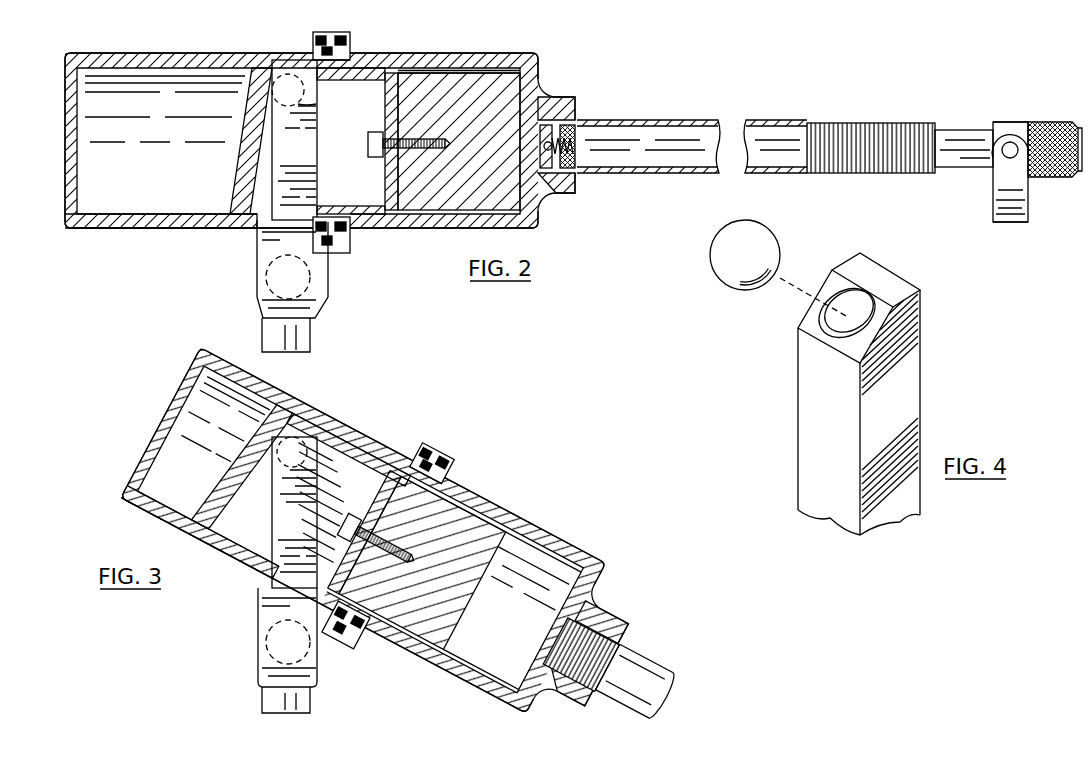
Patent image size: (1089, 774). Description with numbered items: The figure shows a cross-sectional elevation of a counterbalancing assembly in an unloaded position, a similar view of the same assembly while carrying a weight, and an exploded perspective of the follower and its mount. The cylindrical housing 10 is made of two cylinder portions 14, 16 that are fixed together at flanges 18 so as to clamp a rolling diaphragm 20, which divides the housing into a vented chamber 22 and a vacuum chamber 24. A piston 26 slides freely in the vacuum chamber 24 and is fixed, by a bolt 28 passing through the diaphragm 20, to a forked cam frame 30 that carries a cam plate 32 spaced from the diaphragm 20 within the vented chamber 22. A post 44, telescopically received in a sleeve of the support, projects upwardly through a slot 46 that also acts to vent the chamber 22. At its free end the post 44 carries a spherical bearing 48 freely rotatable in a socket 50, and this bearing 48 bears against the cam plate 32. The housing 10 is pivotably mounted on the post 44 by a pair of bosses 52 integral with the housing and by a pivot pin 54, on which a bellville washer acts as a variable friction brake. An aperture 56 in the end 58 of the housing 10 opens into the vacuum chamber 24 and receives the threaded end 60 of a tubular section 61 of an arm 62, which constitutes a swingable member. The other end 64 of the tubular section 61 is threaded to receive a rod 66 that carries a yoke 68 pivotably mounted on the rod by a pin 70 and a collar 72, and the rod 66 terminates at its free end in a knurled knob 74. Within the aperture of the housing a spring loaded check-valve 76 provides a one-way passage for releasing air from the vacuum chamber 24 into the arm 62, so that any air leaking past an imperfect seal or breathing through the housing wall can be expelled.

In FIG. 2, the cylindrical housing 10 is at (425, 49).
In FIG. 3, the cylindrical housing 10 is at (553, 511).
In FIG. 2, the cylinder portion 14 is at (175, 53).
In FIG. 3, the cylinder portion 14 is at (292, 396).
In FIG. 2, the cylinder portion 16 is at (397, 53).
In FIG. 3, the cylinder portion 16 is at (515, 519).
In FIG. 2, the flanges 18 is at (312, 36).
In FIG. 3, the flanges 18 is at (456, 455).
In FIG. 2, the rolling diaphragm 20 is at (437, 71).
In FIG. 3, the rolling diaphragm 20 is at (480, 504).
In FIG. 2, the vented chamber 22 is at (98, 166).
In FIG. 3, the vented chamber 22 is at (171, 460).
In FIG. 2, the vacuum chamber 24 is at (470, 70).
In FIG. 3, the vacuum chamber 24 is at (511, 630).
In FIG. 2, the piston 26 is at (520, 93).
In FIG. 3, the piston 26 is at (418, 626).
In FIG. 2, the bolt 28 is at (368, 146).
In FIG. 3, the bolt 28 is at (348, 532).
In FIG. 2, the forked cam frame 30 is at (357, 72).
In FIG. 3, the forked cam frame 30 is at (360, 445).
In FIG. 2, the cam plate 32 is at (240, 160).
In FIG. 3, the cam plate 32 is at (216, 495).
In FIG. 2, the post 44 is at (306, 173).
In FIG. 3, the post 44 is at (262, 704).
In FIG. 4, the post 44 is at (805, 366).
In FIG. 2, the slot 46 is at (186, 217).
In FIG. 3, the slot 46 is at (240, 558).
In FIG. 2, the spherical bearing 48 is at (281, 78).
In FIG. 3, the spherical bearing 48 is at (284, 441).
In FIG. 4, the spherical bearing 48 is at (770, 246).
In FIG. 2, the socket 50 is at (317, 112).
In FIG. 4, the socket 50 is at (880, 277).
In FIG. 2, the bosses 52 is at (330, 273).
In FIG. 2, the pivot pin 54 is at (313, 291).
In FIG. 3, the pivot pin 54 is at (268, 620).
In FIG. 2, the aperture 56 is at (556, 118).
In FIG. 2, the end of housing 58 is at (558, 192).
In FIG. 2, the threaded end 60 is at (570, 122).
In FIG. 2, the tubular section 61 is at (640, 119).
In FIG. 2, the arm 62 is at (771, 113).
In FIG. 3, the arm 62 is at (645, 655).
In FIG. 2, the other end of tubular arm section 64 is at (868, 123).
In FIG. 2, the rod 66 is at (962, 129).
In FIG. 2, the yoke 68 is at (998, 196).
In FIG. 2, the pin 70 is at (1003, 158).
In FIG. 2, the collar 72 is at (1007, 121).
In FIG. 2, the knurled knob 74 is at (1045, 121).
In FIG. 2, the spring loaded check-valve 76 is at (598, 155).